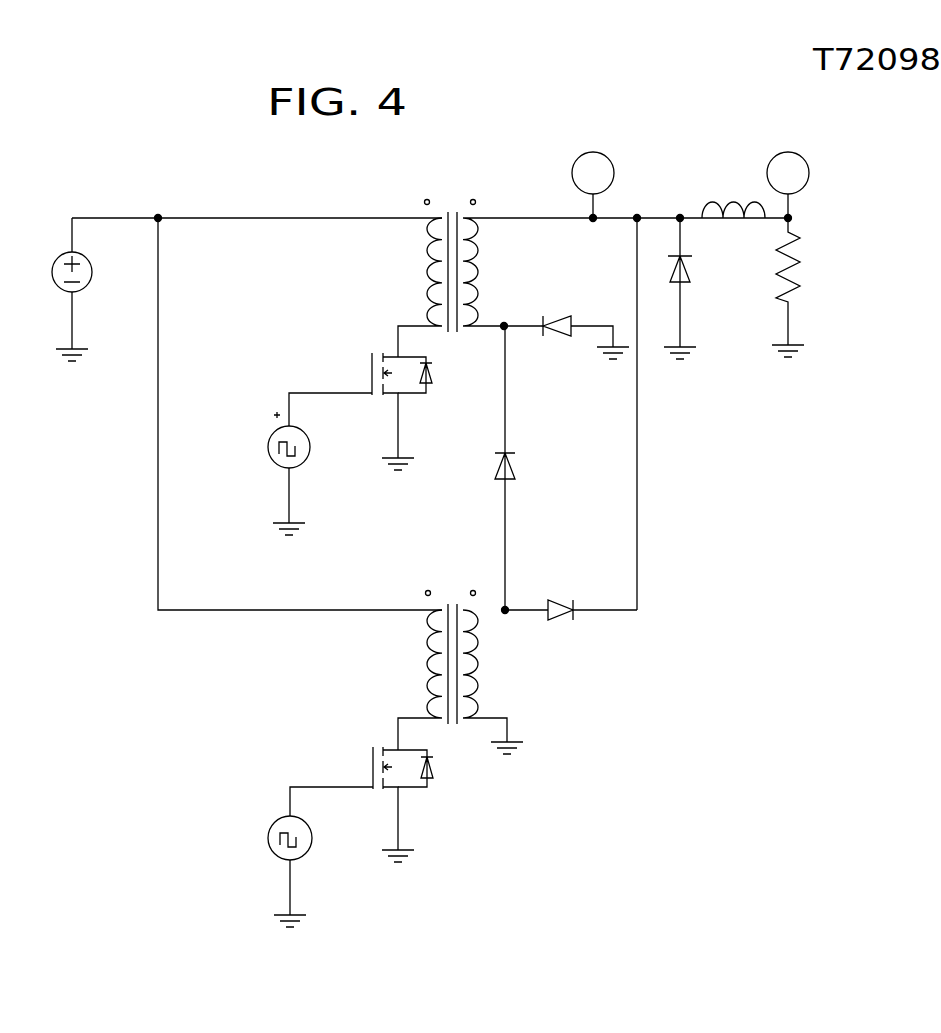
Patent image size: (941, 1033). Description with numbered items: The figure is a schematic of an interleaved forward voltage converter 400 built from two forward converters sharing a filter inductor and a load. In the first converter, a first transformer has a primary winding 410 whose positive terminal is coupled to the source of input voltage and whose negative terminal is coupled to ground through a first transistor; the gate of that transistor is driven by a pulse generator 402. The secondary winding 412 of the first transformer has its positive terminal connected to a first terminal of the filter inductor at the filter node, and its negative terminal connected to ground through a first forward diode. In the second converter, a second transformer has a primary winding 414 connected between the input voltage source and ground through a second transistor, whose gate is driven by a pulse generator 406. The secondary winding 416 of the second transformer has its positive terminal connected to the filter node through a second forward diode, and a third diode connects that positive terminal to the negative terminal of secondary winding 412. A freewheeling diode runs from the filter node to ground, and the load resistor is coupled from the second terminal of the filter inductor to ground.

The interleaved forward voltage converter 400 is at (869, 159).
The pulse generator 402 is at (261, 447).
The pulse generator 406 is at (266, 838).
The primary winding 410 is at (422, 287).
The secondary winding 412 is at (481, 284).
The primary winding 414 is at (421, 662).
The secondary winding 416 is at (484, 662).